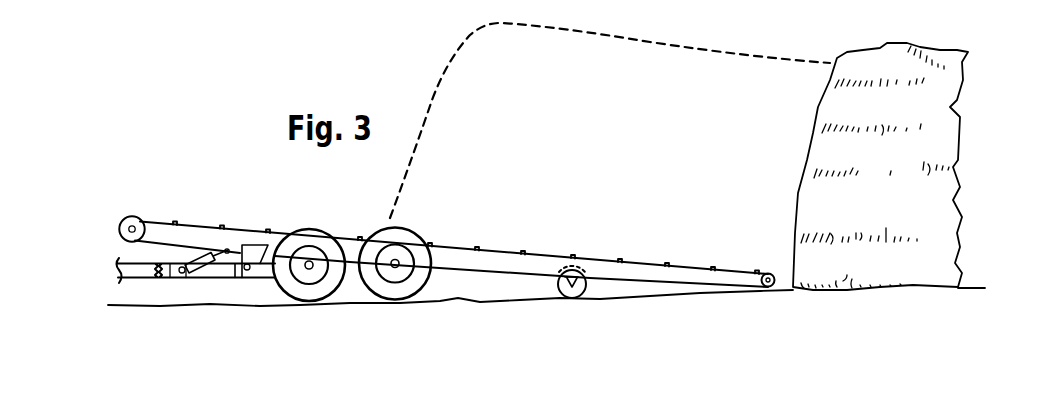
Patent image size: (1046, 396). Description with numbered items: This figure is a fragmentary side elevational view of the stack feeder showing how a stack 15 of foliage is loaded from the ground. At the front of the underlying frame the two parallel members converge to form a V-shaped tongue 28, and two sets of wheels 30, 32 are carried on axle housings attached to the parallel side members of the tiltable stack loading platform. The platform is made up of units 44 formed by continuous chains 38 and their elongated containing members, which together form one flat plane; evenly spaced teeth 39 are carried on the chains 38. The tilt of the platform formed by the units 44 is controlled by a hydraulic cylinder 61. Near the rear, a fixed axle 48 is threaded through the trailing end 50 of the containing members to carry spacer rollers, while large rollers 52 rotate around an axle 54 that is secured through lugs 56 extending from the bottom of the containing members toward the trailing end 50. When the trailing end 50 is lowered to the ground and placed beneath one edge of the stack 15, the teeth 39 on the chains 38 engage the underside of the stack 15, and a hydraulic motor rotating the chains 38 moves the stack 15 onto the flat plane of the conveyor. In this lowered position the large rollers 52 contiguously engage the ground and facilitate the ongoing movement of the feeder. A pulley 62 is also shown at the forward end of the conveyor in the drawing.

The stack 15 is at (858, 53).
The V-shaped tongue 28 is at (117, 262).
The wheels 30 is at (305, 296).
The wheels 32 is at (391, 294).
The chains 38 is at (445, 243).
The teeth 39 is at (662, 252).
The units 44 is at (483, 259).
The fixed axle 48 is at (766, 250).
The trailing end 50 is at (779, 287).
The large rollers 52 is at (583, 297).
The axle 54 is at (572, 298).
The lugs 56 is at (561, 292).
The hydraulic cylinder 61 is at (193, 272).
The head pulley 62 is at (140, 217).